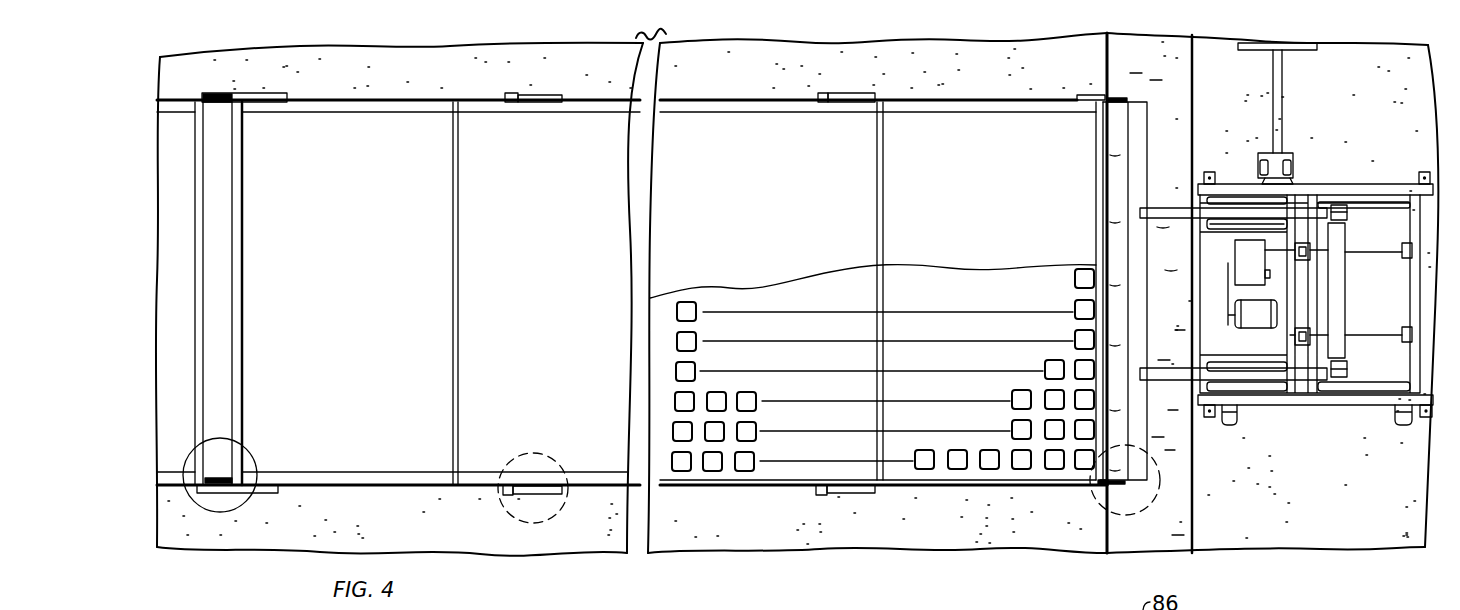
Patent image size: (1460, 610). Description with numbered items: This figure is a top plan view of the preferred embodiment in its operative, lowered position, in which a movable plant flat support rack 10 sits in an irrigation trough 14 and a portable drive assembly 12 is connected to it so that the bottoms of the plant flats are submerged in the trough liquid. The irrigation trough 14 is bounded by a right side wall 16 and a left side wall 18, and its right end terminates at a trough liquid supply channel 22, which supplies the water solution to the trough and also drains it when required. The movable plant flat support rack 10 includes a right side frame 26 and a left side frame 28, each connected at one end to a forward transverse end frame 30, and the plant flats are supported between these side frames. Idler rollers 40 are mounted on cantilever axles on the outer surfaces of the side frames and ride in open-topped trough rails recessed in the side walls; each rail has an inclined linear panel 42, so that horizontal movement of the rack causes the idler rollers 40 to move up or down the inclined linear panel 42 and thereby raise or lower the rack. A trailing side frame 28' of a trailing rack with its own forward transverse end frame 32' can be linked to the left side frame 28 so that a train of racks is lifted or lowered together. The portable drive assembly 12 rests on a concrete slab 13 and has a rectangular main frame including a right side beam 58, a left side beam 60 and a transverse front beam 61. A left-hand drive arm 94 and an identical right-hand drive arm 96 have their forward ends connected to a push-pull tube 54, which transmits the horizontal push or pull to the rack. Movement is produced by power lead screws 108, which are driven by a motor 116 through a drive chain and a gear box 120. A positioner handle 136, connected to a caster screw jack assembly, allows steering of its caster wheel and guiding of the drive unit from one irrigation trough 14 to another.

The irrigation trough 14 is at (222, 118).
The idler rollers 40 is at (512, 93).
The inclined linear panel 42 is at (549, 72).
The right side wall 16 is at (760, 120).
The right side frame 26 is at (1019, 107).
The push-pull tube 54 is at (1172, 120).
The positioner handle 136 is at (1277, 122).
The right side beam 58 is at (1341, 192).
The right-hand drive arm 96 is at (1185, 192).
The power lead screws 108 is at (1358, 228).
The gear box 120 is at (1240, 270).
The motor 116 is at (1258, 315).
The left-hand drive arm 94 is at (1178, 378).
The left side beam 60 is at (1330, 398).
The transverse front beam 61 is at (1415, 415).
The trough liquid supply channel 22 is at (1192, 540).
The concrete slab 13 is at (252, 437).
The forward transverse end frame 30 is at (242, 222).
The forward transverse end frame of trailing support rack 32' is at (241, 293).
The trailing side frame 28' is at (176, 455).
The left side frame 28 is at (398, 463).
The movable plant flat support rack 10 is at (553, 438).
The left side wall 18 is at (788, 474).
The portable drive assembly 12 is at (1100, 500).